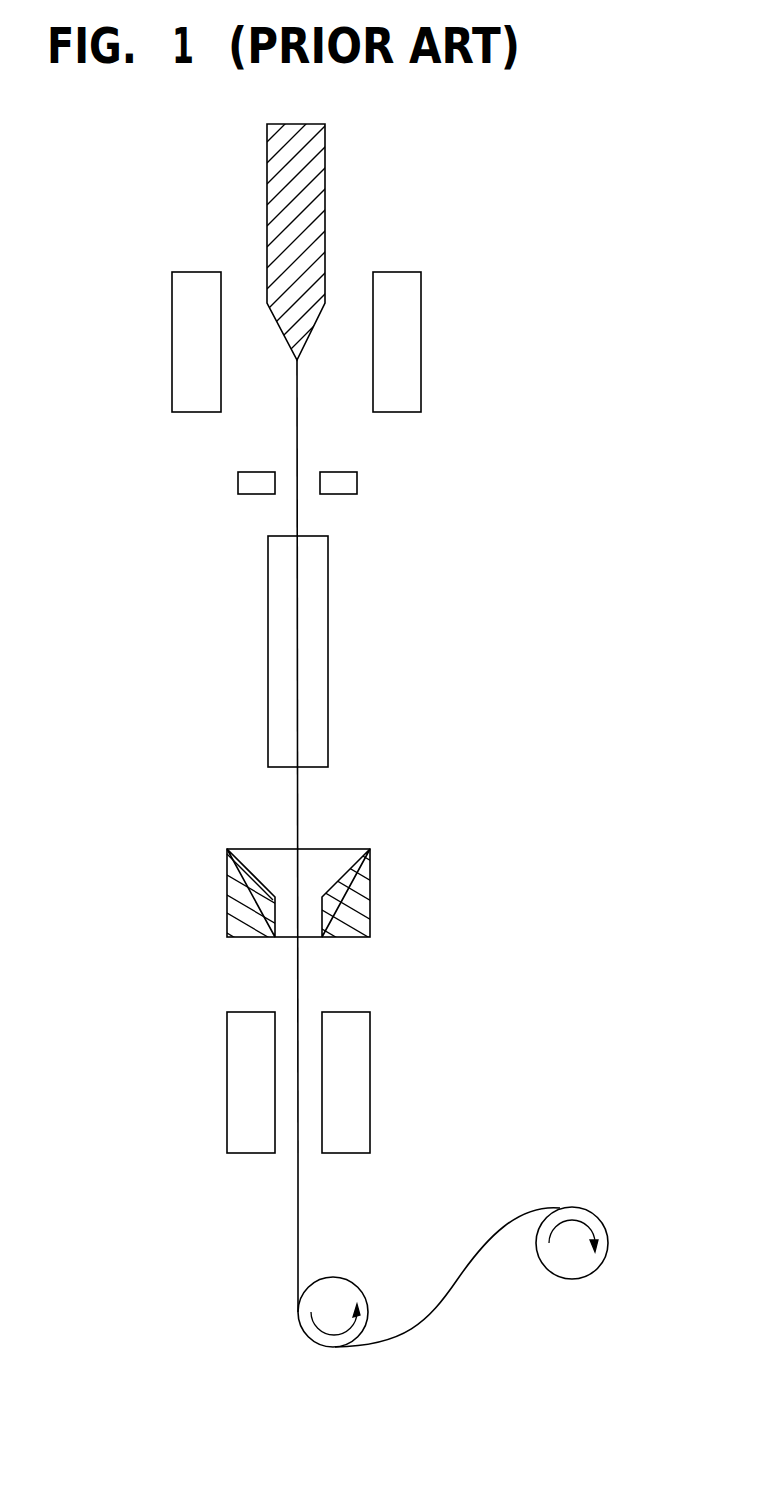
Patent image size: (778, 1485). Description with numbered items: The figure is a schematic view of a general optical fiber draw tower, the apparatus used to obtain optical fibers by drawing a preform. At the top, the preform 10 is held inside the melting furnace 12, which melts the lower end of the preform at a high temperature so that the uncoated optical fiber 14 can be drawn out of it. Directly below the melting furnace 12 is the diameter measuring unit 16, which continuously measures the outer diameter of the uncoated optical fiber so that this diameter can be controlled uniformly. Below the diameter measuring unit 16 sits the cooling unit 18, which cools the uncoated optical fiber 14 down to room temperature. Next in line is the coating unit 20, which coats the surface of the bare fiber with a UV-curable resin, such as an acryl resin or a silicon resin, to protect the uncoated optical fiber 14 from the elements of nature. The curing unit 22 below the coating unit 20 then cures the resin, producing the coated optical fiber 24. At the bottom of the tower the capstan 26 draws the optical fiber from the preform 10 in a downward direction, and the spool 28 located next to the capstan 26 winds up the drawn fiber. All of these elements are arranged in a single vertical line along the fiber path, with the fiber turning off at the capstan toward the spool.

The preform 10 is at (302, 197).
The melting furnace 12 is at (403, 337).
The uncoated optical fiber 14 is at (298, 442).
The diameter measuring unit 16 is at (350, 483).
The cooling unit 18 is at (315, 640).
The coating unit 20 is at (352, 908).
The curing unit 22 is at (352, 1070).
The coated optical fiber 24 is at (298, 1207).
The capstan 26 is at (310, 1299).
The spool 28 is at (572, 1210).